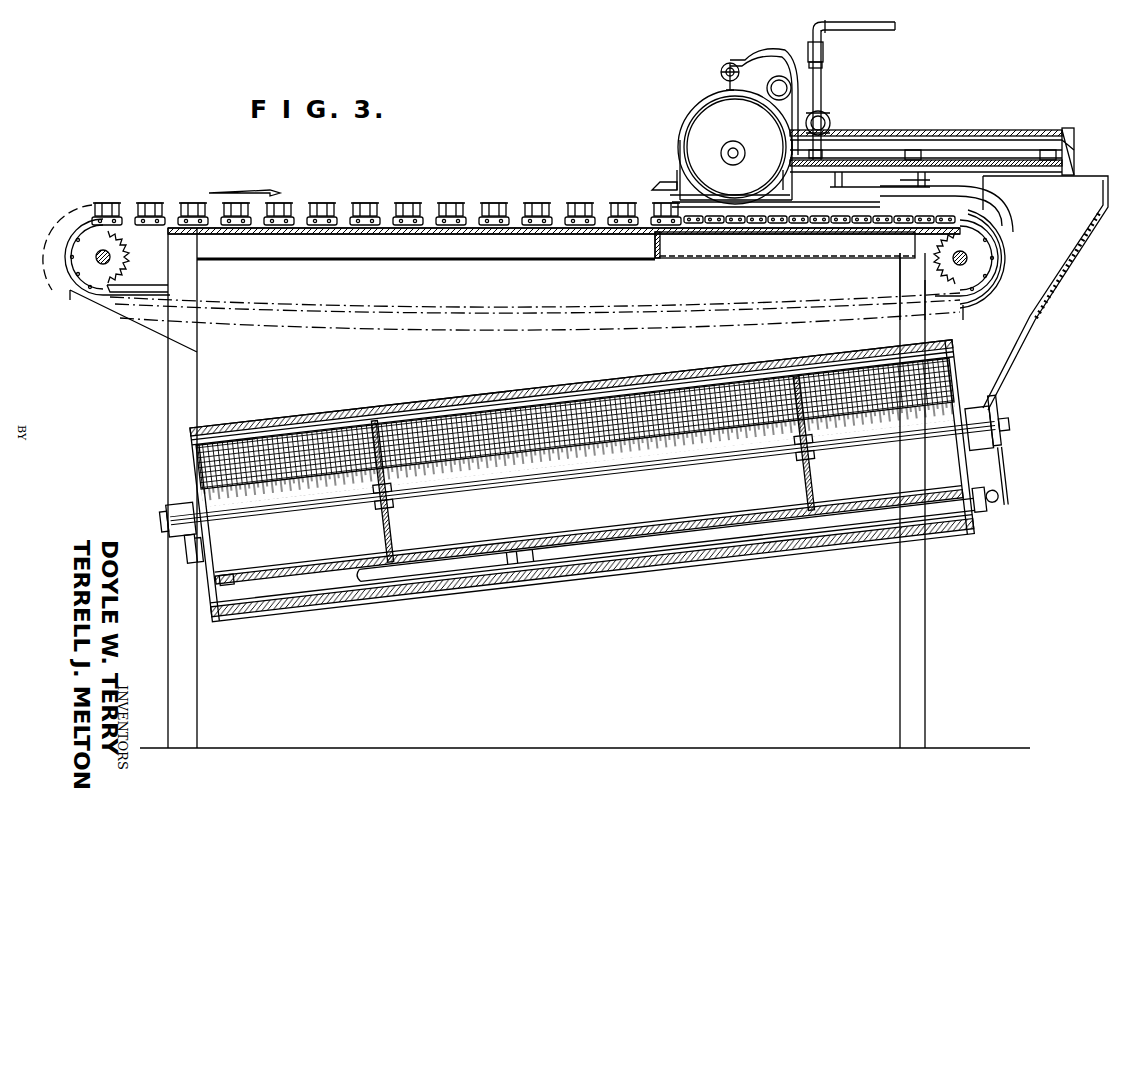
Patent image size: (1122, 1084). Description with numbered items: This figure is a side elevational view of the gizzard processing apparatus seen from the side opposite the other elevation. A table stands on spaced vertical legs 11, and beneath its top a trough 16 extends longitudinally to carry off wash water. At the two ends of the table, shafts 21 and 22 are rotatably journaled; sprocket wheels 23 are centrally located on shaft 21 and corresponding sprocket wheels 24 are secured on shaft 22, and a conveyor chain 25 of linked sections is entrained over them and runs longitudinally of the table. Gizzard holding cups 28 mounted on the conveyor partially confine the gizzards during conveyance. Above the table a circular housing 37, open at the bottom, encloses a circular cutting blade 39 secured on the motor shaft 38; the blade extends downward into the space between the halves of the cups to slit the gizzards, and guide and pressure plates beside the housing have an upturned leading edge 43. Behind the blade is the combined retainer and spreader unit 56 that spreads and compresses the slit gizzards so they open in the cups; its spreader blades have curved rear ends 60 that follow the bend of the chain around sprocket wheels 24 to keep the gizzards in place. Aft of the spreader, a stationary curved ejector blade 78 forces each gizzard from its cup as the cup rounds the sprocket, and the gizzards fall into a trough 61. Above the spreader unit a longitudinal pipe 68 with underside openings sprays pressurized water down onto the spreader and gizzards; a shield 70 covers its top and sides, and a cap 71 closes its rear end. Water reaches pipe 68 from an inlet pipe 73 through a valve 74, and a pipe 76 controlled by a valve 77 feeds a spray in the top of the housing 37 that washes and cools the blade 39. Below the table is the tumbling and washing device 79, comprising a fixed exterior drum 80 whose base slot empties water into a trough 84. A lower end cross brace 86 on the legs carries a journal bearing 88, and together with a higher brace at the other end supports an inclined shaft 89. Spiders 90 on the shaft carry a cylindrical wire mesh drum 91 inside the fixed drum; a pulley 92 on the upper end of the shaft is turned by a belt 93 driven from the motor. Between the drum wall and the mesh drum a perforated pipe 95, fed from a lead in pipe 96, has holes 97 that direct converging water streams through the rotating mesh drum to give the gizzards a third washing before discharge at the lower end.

The legs 11 is at (195, 690).
The trough 16 is at (782, 245).
The shaft 21 is at (108, 260).
The shaft 22 is at (955, 260).
The sprocket wheels 23 is at (90, 242).
The sprocket wheels 24 is at (992, 250).
The conveyor chain 25 is at (476, 208).
The gizzard holding cups 28 is at (428, 202).
The circular housing 37 is at (678, 130).
The motor shaft 38 is at (729, 170).
The circular cutting blade 39 is at (745, 135).
The upturned leading edge 43 is at (652, 186).
The retainer and spreader unit 56 is at (888, 180).
The curved rear ends 60 is at (1010, 214).
The trough 61 is at (1080, 268).
The pipe 68 is at (1025, 158).
The shield 70 is at (965, 135).
The cap 71 is at (1072, 158).
The inlet pipe 73 is at (813, 24).
The valve 74 is at (830, 120).
The pipe 76 is at (772, 50).
The valve 77 is at (722, 60).
The ejector blade 78 is at (1012, 272).
The tumbling and washing device 79 is at (579, 457).
The fixed exterior drum 80 is at (581, 466).
The trough 84 is at (596, 595).
The end cross brace 86 is at (164, 567).
The journal bearing 88 is at (164, 539).
The shaft 89 is at (586, 501).
The spiders 90 is at (616, 481).
The wire mesh drum 91 is at (575, 418).
The pulley 92 is at (1007, 463).
The belt 93 is at (1018, 448).
The pipe 95 is at (671, 589).
The lead in pipe 96 is at (1004, 562).
The holes 97 is at (494, 551).